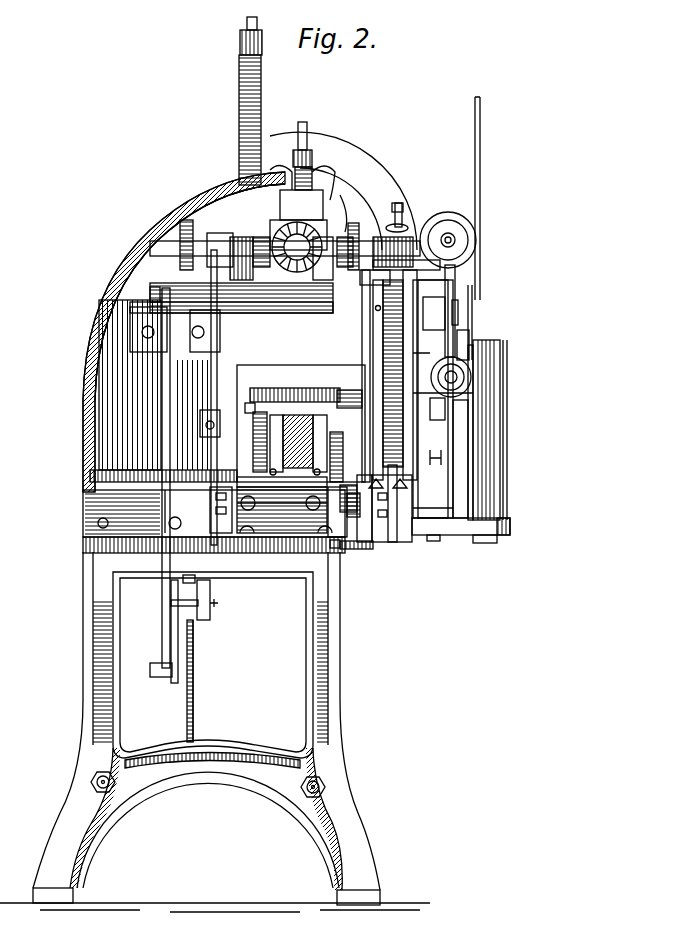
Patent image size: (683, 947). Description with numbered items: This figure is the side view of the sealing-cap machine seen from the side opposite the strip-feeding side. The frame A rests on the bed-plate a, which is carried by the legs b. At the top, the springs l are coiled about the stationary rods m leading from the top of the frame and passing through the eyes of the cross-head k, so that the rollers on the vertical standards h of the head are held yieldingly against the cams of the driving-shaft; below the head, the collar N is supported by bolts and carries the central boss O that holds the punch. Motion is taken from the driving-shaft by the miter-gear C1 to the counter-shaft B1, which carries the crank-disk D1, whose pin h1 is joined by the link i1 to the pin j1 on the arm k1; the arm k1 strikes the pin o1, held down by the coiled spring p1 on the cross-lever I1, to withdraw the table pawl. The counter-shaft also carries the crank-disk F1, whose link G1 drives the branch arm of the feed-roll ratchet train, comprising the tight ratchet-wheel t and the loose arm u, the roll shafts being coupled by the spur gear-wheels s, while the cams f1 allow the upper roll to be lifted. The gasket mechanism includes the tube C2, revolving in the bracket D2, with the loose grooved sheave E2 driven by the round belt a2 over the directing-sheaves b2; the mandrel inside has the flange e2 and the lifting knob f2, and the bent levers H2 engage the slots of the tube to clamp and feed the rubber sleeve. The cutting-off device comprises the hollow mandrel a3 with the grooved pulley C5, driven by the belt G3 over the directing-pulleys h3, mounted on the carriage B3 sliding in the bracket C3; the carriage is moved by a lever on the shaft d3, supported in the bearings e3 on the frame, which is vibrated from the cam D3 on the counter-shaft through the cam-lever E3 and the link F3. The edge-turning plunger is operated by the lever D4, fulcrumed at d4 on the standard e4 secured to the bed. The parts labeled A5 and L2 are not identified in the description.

The frame A is at (95, 356).
The bed-plate a is at (83, 511).
The legs b is at (82, 632).
The crank-disk D1 is at (162, 232).
The cam D3 is at (205, 190).
The springs l is at (266, 72).
The cross-head k is at (241, 45).
The stationary rods m is at (258, 27).
The adjusting screw holder A5 is at (331, 137).
The miter-gear C1 is at (364, 142).
The counter-shaft B1 is at (387, 180).
The vertical standards h is at (285, 289).
The link G1 is at (366, 356).
The cams f1 is at (394, 218).
The crank-disk F1 is at (410, 203).
The flange e2 is at (430, 213).
The grooved sheave E2 is at (452, 214).
The round belt a2 is at (481, 205).
The directing-sheaves b2 is at (478, 241).
The tube C2 is at (463, 270).
The belt G3 is at (483, 286).
The bracket D2 is at (486, 318).
The grooved pulley C5 is at (484, 341).
The lever D4 is at (522, 347).
The directing-pulleys h3 is at (504, 376).
The fulcrum d4 is at (534, 386).
The threaded column L2 is at (500, 413).
The standard e4 is at (498, 443).
The bracket C3 is at (505, 469).
The hollow mandrel a3 is at (423, 432).
The bent levers H2 is at (408, 466).
The ratchet-wheel t is at (431, 541).
The carriage B3 is at (415, 560).
The shaft d3 is at (372, 556).
The bearings e3 is at (368, 585).
The collar N is at (264, 386).
The central boss O is at (247, 407).
The loose arm u is at (378, 427).
The pin h1 is at (125, 291).
The cam-lever E3 is at (210, 373).
The link F3 is at (95, 438).
The spur gear-wheels s is at (197, 397).
The knob f2 is at (205, 506).
The link i1 is at (160, 606).
The pin j1 is at (155, 675).
The cross-lever I1 is at (206, 608).
The arm k1 is at (192, 669).
The coiled spring p1 is at (195, 700).
The pin o1 is at (190, 580).